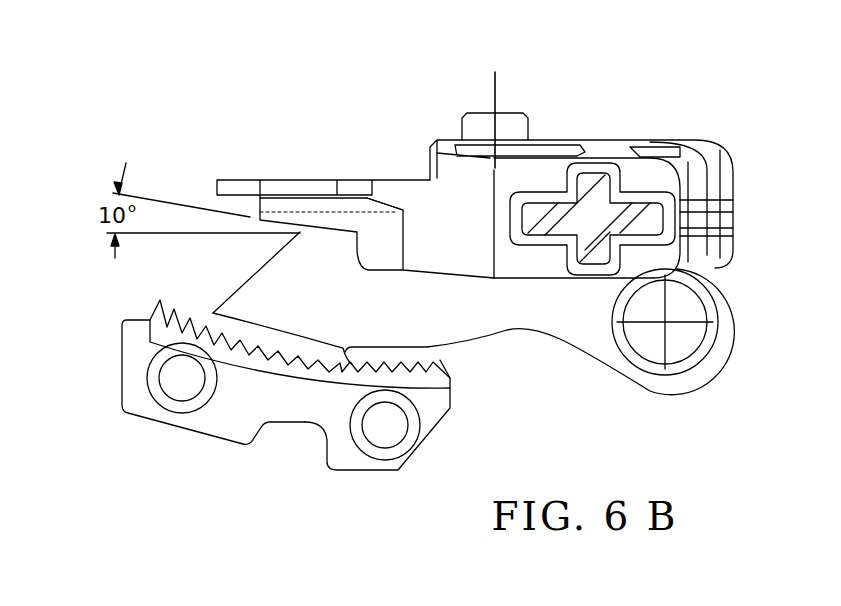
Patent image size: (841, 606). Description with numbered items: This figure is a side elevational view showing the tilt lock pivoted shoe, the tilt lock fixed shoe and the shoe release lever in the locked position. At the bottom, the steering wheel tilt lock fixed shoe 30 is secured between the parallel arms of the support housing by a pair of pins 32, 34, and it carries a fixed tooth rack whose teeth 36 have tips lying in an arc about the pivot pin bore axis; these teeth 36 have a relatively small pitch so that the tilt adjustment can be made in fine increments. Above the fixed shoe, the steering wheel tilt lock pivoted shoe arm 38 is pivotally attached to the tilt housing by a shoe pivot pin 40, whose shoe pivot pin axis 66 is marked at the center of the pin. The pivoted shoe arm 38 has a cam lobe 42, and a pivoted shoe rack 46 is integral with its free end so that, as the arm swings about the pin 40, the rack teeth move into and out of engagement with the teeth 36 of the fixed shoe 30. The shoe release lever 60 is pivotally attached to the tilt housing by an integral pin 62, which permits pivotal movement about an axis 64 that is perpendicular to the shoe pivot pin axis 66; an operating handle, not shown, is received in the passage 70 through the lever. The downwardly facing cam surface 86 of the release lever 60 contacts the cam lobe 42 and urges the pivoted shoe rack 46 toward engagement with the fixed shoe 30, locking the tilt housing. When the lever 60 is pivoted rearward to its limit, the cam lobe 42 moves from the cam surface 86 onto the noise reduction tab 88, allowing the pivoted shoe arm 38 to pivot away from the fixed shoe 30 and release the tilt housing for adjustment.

The steering wheel tilt lock fixed shoe 30 is at (137, 345).
The pin 32 is at (172, 393).
The pin 34 is at (383, 443).
The teeth 36 is at (310, 367).
The steering wheel tilt lock pivoted shoe arm 38 is at (495, 320).
The shoe pivot pin 40 is at (675, 355).
The cam lobe 42 is at (330, 253).
The pivoted shoe rack 46 is at (232, 335).
The shoe release lever 60 is at (330, 178).
The integral pin 62 is at (460, 127).
The axis 64 is at (493, 97).
The shoe pivot pin axis 66 is at (665, 322).
The passage 70 is at (560, 225).
The cam surface 86 is at (280, 220).
The noise reduction tab 88 is at (233, 178).